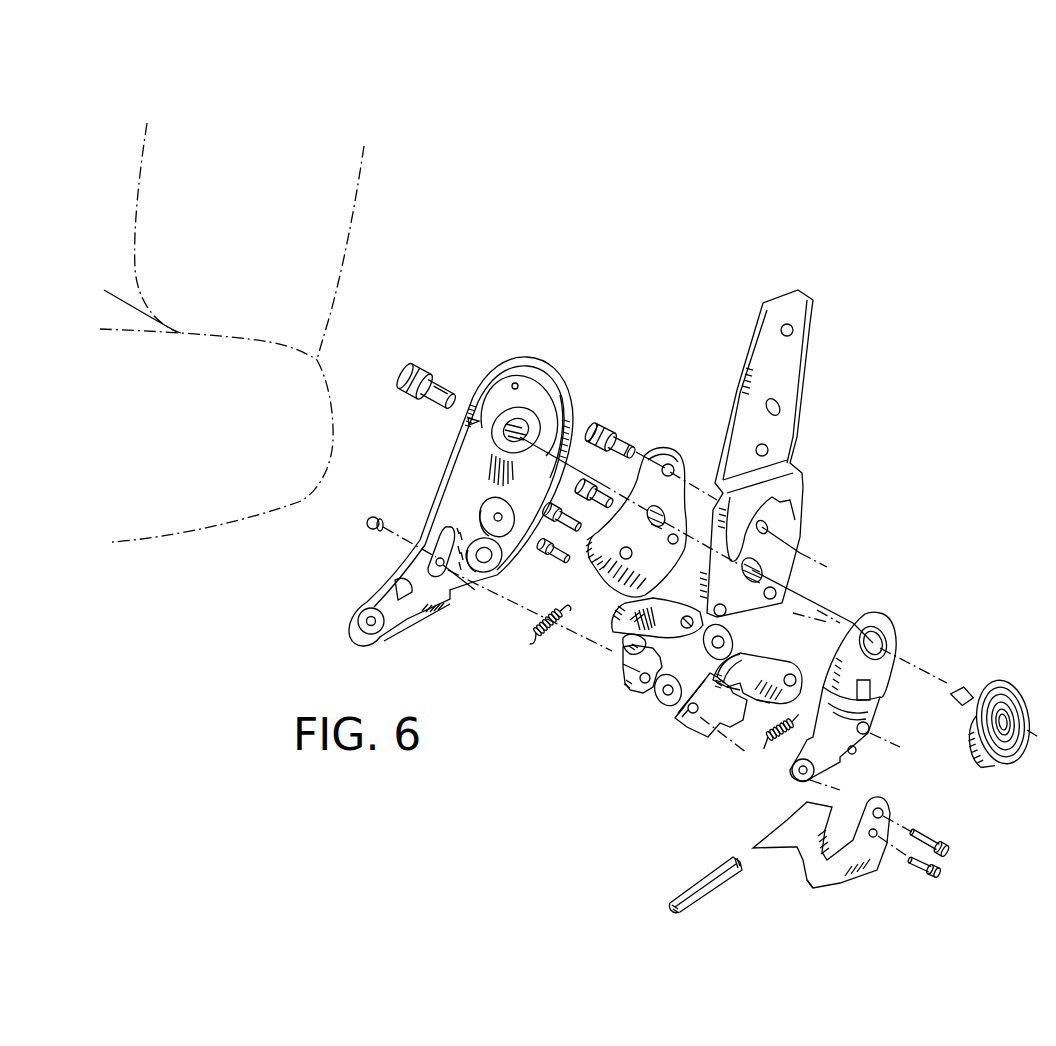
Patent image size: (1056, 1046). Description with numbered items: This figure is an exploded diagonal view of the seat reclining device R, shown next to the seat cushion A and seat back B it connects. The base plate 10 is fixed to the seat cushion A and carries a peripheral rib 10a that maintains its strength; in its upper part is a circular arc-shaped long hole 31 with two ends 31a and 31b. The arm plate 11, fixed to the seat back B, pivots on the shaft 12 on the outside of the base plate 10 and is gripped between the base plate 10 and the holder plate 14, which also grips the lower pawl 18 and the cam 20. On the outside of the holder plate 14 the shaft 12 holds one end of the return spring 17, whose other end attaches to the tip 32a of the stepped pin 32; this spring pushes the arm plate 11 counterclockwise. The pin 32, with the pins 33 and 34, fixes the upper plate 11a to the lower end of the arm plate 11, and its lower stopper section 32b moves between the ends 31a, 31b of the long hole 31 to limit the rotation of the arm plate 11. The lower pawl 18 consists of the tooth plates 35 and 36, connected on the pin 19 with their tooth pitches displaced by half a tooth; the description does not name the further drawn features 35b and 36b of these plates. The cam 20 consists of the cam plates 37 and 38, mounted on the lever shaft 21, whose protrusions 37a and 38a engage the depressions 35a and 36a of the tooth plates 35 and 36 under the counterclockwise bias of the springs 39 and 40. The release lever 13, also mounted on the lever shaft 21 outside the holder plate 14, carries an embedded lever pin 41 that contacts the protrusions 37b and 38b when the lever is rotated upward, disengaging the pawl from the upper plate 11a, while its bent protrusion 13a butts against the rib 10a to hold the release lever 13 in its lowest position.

The base plate 10 is at (498, 475).
The rib 10a is at (532, 356).
The arm plate 11 is at (812, 342).
The upper plate 11a is at (608, 582).
The shaft 12 is at (420, 362).
The release lever 13 is at (785, 824).
The protrusion 13a is at (808, 886).
The holder plate 14 is at (897, 623).
The return spring 17 is at (1007, 680).
The lower pawl 18 is at (740, 646).
The pin 19 is at (550, 557).
The cam 20 is at (647, 713).
The lever shaft 21 is at (935, 842).
The circular arc-shaped long hole 31 is at (514, 380).
The end of long hole 31a is at (573, 398).
The end of long hole 31b is at (500, 396).
The pin 32 is at (618, 432).
The tip of pin 32a is at (636, 447).
The stopper section 32b is at (598, 424).
The pin 33 is at (590, 487).
The pin 34 is at (502, 516).
The tooth plate 35 is at (792, 676).
The depression 35a is at (730, 694).
The lock plate projection 35b is at (762, 742).
The tooth plate 36 is at (668, 612).
The depression 36a is at (605, 632).
The latch plate lug 36b is at (622, 650).
The cam plate 37 is at (691, 745).
The protrusion 37a is at (742, 665).
The protrusion 37b is at (680, 722).
The cam plate 38 is at (628, 682).
The protrusion 38a is at (710, 649).
The protrusion 38b is at (640, 700).
The spring 39 is at (773, 752).
The spring 40 is at (533, 638).
The lever pin 41 is at (912, 870).
The seat cushion A is at (228, 526).
The seat back B is at (352, 247).
The seat reclining device R is at (677, 340).